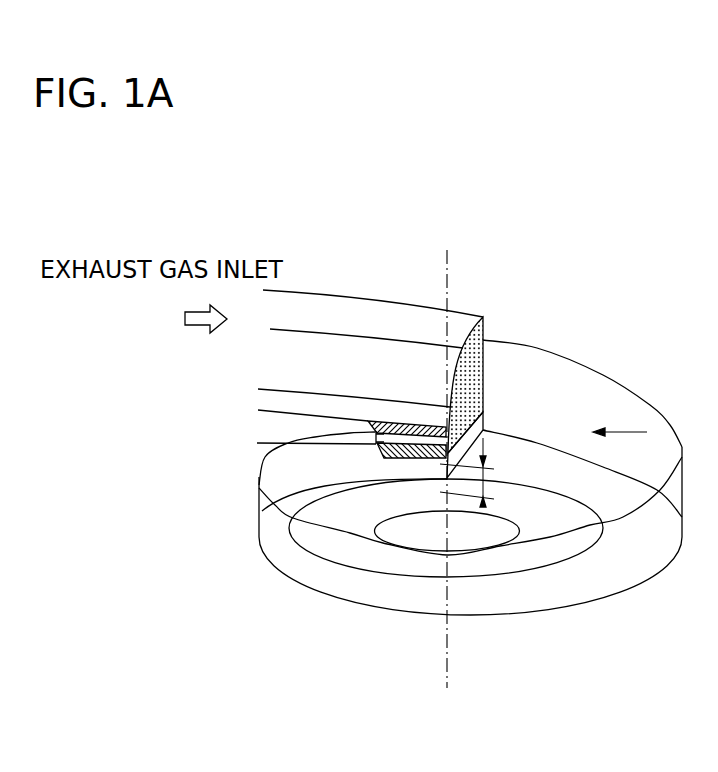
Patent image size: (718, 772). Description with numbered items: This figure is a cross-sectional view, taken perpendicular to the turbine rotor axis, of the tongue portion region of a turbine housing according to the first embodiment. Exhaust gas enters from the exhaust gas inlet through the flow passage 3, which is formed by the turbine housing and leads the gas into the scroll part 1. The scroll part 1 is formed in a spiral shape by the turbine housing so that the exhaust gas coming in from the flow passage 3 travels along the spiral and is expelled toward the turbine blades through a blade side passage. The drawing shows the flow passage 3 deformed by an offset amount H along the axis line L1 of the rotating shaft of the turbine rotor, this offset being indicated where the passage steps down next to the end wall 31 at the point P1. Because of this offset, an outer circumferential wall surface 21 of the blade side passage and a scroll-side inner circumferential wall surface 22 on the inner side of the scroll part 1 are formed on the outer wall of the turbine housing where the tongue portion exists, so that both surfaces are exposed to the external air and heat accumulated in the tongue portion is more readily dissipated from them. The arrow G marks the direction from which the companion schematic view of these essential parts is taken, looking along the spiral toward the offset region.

The scroll part 1 is at (566, 606).
The flow passage 3 is at (323, 322).
The end wall plate 31 is at (474, 368).
The scroll-side inner circumferential wall surface 22 is at (404, 421).
The outer circumferential wall surface of the blade side passage 21 is at (407, 457).
The gap position P1 is at (376, 449).
The offset amount H is at (479, 472).
The arrow G is at (623, 445).
The axis line L1 is at (445, 483).